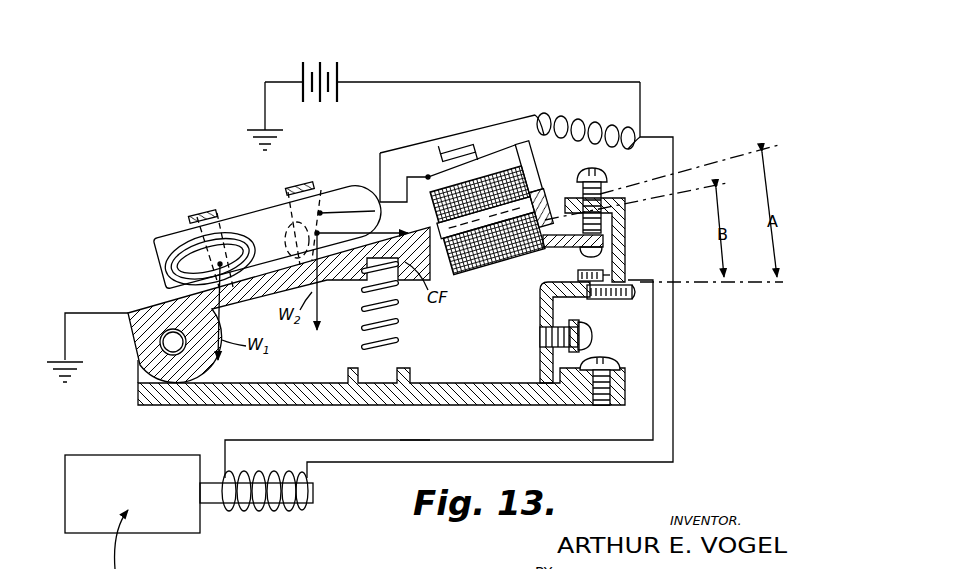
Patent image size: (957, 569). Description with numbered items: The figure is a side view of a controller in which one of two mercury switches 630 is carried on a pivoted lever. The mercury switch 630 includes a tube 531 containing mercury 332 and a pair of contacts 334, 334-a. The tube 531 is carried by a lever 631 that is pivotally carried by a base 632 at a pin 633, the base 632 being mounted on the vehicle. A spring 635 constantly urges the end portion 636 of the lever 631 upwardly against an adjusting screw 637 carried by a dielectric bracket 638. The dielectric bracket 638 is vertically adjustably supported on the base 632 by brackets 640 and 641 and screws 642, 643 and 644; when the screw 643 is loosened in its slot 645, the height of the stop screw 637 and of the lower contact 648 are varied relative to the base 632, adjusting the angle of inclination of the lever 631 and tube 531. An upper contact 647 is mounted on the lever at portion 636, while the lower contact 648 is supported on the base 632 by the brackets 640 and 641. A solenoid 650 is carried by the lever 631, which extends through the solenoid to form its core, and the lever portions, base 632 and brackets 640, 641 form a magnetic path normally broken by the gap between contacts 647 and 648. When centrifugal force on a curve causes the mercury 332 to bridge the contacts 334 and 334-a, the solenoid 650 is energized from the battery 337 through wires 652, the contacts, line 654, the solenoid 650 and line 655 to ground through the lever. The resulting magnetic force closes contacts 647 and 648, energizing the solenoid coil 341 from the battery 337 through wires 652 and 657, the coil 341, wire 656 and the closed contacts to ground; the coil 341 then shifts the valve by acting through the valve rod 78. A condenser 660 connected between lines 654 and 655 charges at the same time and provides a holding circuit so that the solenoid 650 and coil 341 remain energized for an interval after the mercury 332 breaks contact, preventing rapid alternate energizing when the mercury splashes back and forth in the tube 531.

The battery 337 is at (338, 68).
The wires 652 is at (520, 82).
The wire 657 is at (583, 463).
The line 654 is at (388, 157).
The condenser 660 is at (458, 149).
The mercury switch 630 is at (152, 231).
The mercury 332 is at (180, 270).
The tube 531 is at (205, 212).
The contact 334 is at (290, 210).
The contact 334-a is at (320, 211).
The lever 631 is at (147, 307).
The pin 633 is at (167, 343).
The base 632 is at (167, 397).
The spring 635 is at (400, 320).
The solenoid 650 is at (477, 273).
The line 655 is at (524, 168).
The end portion 636 is at (553, 248).
The adjusting screw 637 is at (608, 177).
The dielectric bracket 638 is at (625, 217).
The upper contact 647 is at (612, 263).
The lower contact 648 is at (603, 267).
The screw 642 is at (627, 297).
The bracket 640 is at (540, 362).
The screw 643 is at (541, 340).
The slot 645 is at (580, 352).
The bracket 641 is at (625, 383).
The screw 644 is at (597, 405).
The wire 656 is at (413, 440).
The valve rod 78 is at (207, 495).
The solenoid coil 341 is at (273, 510).